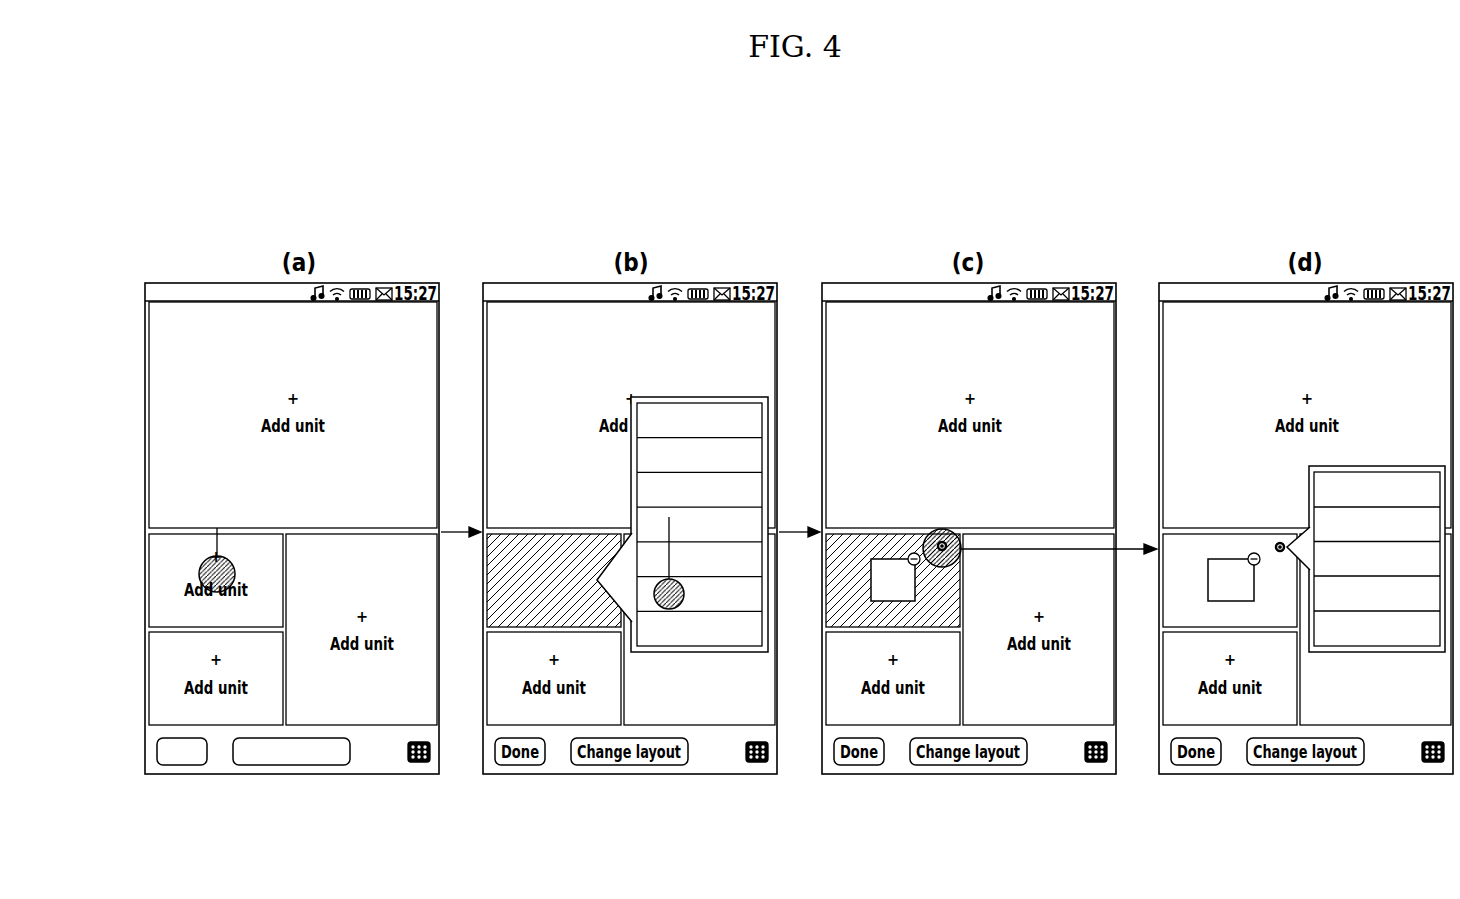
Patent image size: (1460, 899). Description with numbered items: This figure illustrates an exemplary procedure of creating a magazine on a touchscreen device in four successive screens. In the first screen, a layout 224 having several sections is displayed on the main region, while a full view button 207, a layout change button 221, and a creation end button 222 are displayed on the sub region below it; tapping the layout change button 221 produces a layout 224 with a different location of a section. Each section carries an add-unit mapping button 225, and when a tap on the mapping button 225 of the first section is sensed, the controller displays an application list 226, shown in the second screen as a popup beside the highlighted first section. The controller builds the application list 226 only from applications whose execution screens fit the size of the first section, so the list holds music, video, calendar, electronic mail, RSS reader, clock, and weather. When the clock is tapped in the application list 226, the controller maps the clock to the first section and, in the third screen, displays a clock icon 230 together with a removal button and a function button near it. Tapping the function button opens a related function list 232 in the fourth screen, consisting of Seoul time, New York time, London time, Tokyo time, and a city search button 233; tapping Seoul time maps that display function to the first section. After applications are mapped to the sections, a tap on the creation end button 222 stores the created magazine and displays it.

The full view button 207 is at (418, 766).
The layout change button 221 is at (320, 766).
The creation end button 222 is at (183, 766).
The layout 224 is at (128, 440).
The mapping button 225 is at (200, 567).
The application list 226 is at (770, 422).
The clock icon 230 is at (870, 600).
The function list 232 is at (1378, 467).
The city search button 233 is at (1393, 625).